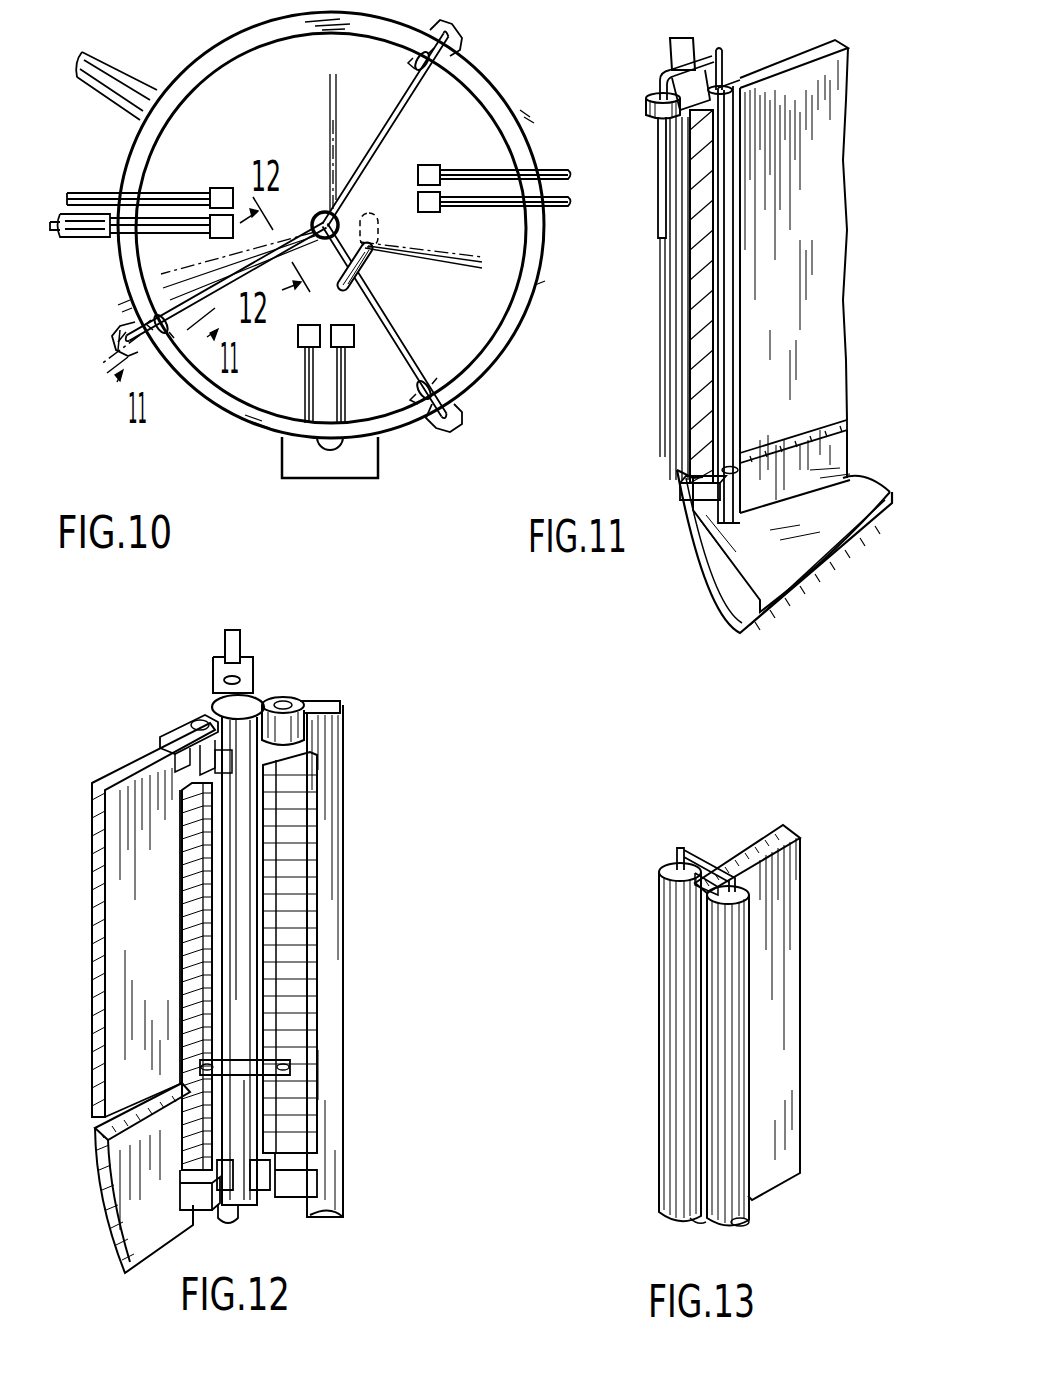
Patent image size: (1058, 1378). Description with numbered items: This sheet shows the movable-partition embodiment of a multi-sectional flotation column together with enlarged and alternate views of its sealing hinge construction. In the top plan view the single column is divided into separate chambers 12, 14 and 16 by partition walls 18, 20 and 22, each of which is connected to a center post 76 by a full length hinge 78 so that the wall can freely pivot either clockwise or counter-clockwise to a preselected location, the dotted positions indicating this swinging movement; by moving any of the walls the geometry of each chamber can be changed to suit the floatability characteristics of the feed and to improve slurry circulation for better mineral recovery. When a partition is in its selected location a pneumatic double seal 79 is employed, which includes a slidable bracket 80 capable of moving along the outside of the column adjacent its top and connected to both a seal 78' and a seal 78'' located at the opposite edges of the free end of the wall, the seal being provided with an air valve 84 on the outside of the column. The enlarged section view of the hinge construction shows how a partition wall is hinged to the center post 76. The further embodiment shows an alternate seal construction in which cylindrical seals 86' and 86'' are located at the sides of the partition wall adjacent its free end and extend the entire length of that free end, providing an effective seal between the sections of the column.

In FIG. 10, the chamber 12 is at (290, 128).
In FIG. 10, the chamber 14 is at (488, 248).
In FIG. 10, the chamber 16 is at (281, 393).
In FIG. 10, the partition wall 18 is at (400, 110).
In FIG. 11, the partition wall 18 is at (682, 54).
In FIG. 12, the partition wall 18 is at (222, 642).
In FIG. 13, the partition wall 18 is at (700, 1216).
In FIG. 10, the partition wall 20 is at (400, 332).
In FIG. 12, the partition wall 20 is at (327, 707).
In FIG. 10, the partition wall 22 is at (212, 285).
In FIG. 11, the partition wall 22 is at (826, 262).
In FIG. 12, the partition wall 22 is at (115, 770).
In FIG. 10, the center post 76 is at (313, 221).
In FIG. 12, the center post 76 is at (256, 697).
In FIG. 10, the full length hinge 78 is at (410, 229).
In FIG. 12, the full length hinge 78 is at (174, 996).
In FIG. 11, the seal 78' is at (748, 52).
In FIG. 11, the seal 78'' is at (750, 284).
In FIG. 10, the pneumatic double seal 79 is at (110, 337).
In FIG. 11, the pneumatic double seal 79 is at (659, 54).
In FIG. 13, the pneumatic double seal 79 is at (656, 855).
In FIG. 10, the slidable bracket 80 is at (125, 340).
In FIG. 11, the slidable bracket 80 is at (648, 108).
In FIG. 11, the air valve 84 is at (656, 220).
In FIG. 13, the seal 86' is at (644, 1042).
In FIG. 13, the seal 86'' is at (753, 1056).